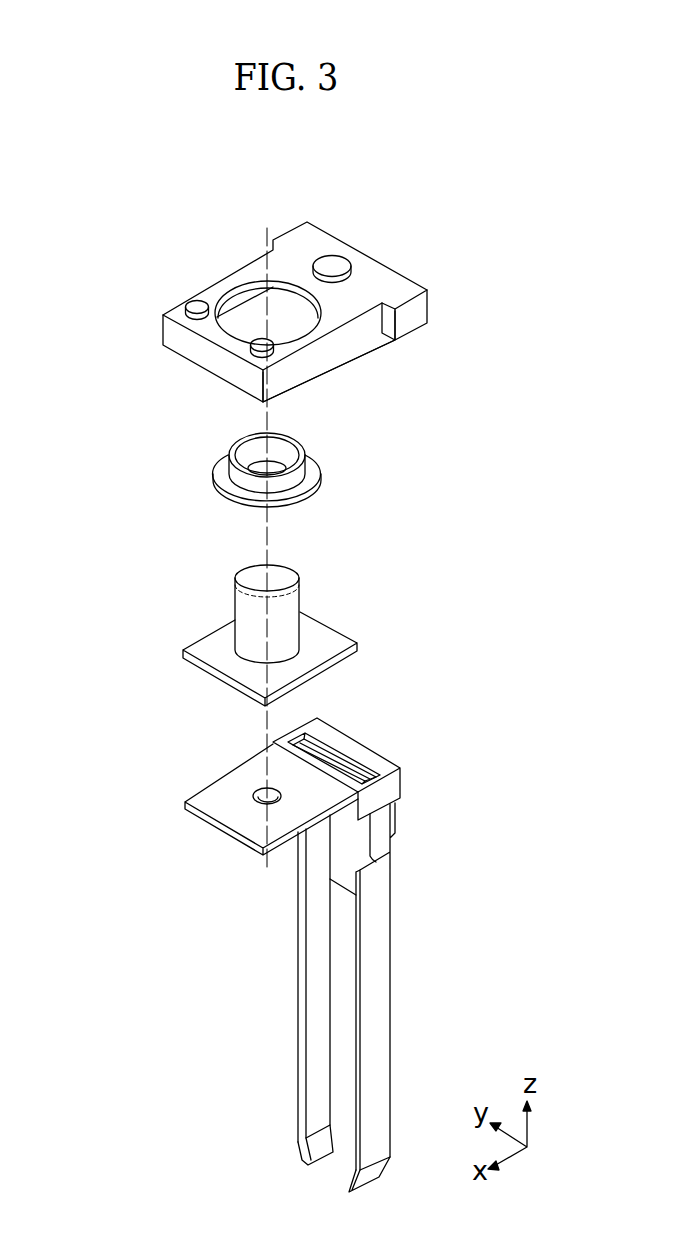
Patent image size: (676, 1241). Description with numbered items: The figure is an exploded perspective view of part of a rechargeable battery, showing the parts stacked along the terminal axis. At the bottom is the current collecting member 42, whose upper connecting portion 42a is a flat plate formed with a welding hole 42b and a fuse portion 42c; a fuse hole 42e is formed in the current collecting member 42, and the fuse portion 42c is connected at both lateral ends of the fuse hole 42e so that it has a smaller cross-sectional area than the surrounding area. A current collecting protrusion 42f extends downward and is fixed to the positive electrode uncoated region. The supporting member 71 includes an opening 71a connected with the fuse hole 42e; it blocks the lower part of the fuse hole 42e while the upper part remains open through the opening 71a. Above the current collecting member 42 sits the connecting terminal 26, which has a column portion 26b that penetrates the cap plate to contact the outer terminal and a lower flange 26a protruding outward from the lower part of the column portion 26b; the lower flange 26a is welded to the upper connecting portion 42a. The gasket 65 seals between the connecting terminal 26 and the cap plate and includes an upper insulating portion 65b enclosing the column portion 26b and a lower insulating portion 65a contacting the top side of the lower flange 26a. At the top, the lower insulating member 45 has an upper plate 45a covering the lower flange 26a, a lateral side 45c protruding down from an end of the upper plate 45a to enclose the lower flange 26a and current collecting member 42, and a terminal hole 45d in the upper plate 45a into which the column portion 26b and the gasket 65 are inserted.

The lower insulating member 45 is at (268, 284).
The upper plate 45a is at (317, 247).
The lateral side 45c is at (347, 338).
The terminal hole 45d is at (232, 293).
The gasket 65 is at (263, 457).
The lower insulating portion 65a is at (310, 470).
The upper insulating portion 65b is at (242, 478).
The connecting terminal 26 is at (246, 629).
The lower flange 26a is at (208, 648).
The column portion 26b is at (253, 608).
The supporting member 71 is at (353, 808).
The opening 71a is at (322, 742).
The current collecting member 42 is at (286, 952).
The upper connecting portion 42a is at (213, 798).
The welding hole 42b is at (260, 792).
The fuse portion 42c is at (370, 780).
The fuse hole 42e is at (338, 762).
The current collecting protrusion 42f is at (378, 990).